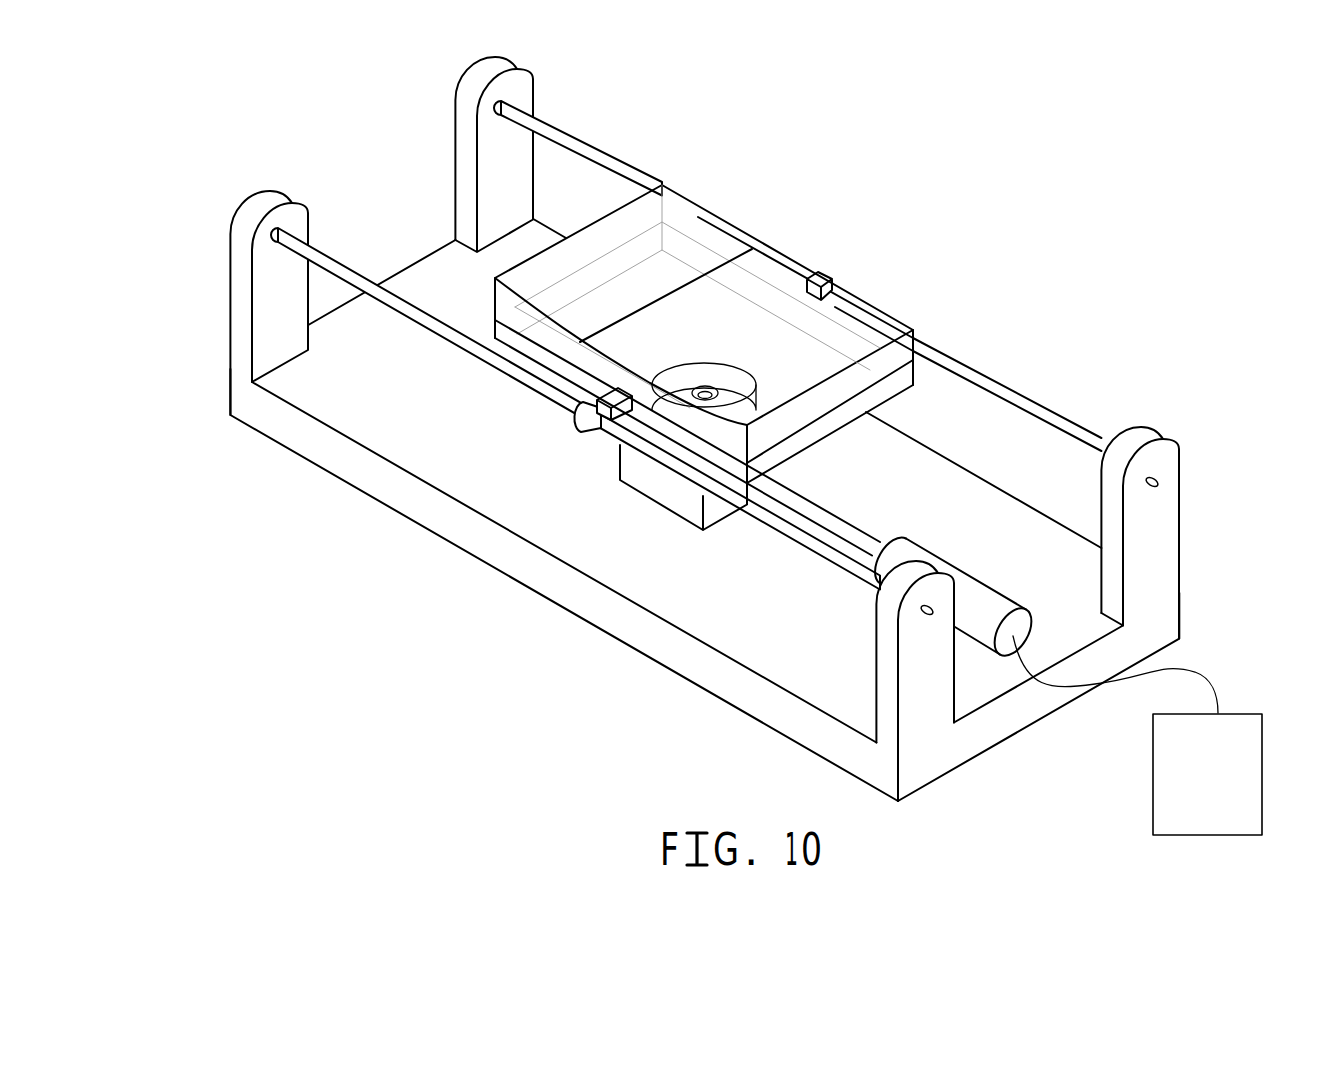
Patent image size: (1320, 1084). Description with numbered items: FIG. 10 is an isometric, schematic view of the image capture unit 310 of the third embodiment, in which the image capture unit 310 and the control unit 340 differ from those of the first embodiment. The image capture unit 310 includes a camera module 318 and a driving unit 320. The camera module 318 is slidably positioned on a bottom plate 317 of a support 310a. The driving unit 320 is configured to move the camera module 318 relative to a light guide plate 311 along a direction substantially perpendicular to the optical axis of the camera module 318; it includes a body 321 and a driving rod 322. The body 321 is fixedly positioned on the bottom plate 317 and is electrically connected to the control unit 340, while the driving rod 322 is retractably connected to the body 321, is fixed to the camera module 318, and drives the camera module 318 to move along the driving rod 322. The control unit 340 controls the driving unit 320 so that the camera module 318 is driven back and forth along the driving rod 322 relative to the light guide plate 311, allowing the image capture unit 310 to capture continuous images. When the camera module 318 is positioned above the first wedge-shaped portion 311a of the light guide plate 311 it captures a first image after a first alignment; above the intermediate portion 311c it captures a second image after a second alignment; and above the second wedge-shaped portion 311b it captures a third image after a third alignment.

The image capture unit 310 is at (976, 153).
The support 310a is at (265, 407).
The light guide plate 311 is at (897, 240).
The first wedge-shaped portion 311a is at (652, 215).
The second wedge-shaped portion 311b is at (780, 382).
The intermediate portion 311c is at (678, 323).
The bottom plate 317 is at (803, 640).
The camera module 318 is at (678, 493).
The driving unit 320 is at (1172, 407).
The body 321 is at (915, 553).
The driving rod 322 is at (807, 510).
The control unit 340 is at (1220, 712).